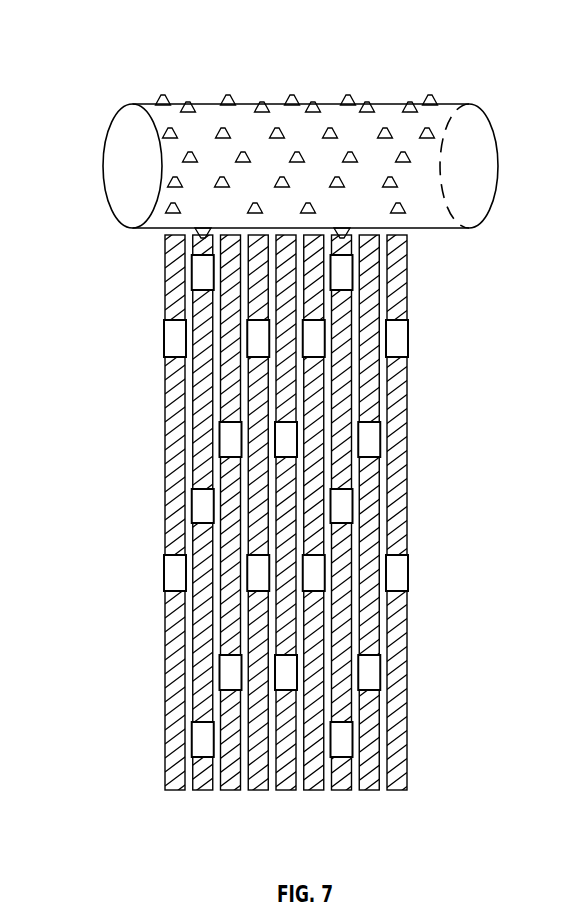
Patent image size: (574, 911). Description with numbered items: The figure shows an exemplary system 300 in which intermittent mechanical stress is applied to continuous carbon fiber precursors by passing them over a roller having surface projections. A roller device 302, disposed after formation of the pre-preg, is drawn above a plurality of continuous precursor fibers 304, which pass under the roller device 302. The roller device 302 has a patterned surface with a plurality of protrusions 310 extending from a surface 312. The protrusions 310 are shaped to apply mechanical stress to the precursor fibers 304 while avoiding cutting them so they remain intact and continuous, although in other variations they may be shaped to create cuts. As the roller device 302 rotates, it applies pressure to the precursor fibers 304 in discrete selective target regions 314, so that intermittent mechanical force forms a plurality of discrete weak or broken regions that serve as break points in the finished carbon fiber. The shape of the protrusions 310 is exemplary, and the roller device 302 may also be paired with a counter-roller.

The system 300 is at (124, 62).
The roller device 302 is at (127, 162).
The continuous precursor fibers 304 is at (175, 790).
The protrusions 310 is at (228, 100).
The surface 312 is at (335, 117).
The discrete selective target regions 314 is at (368, 440).